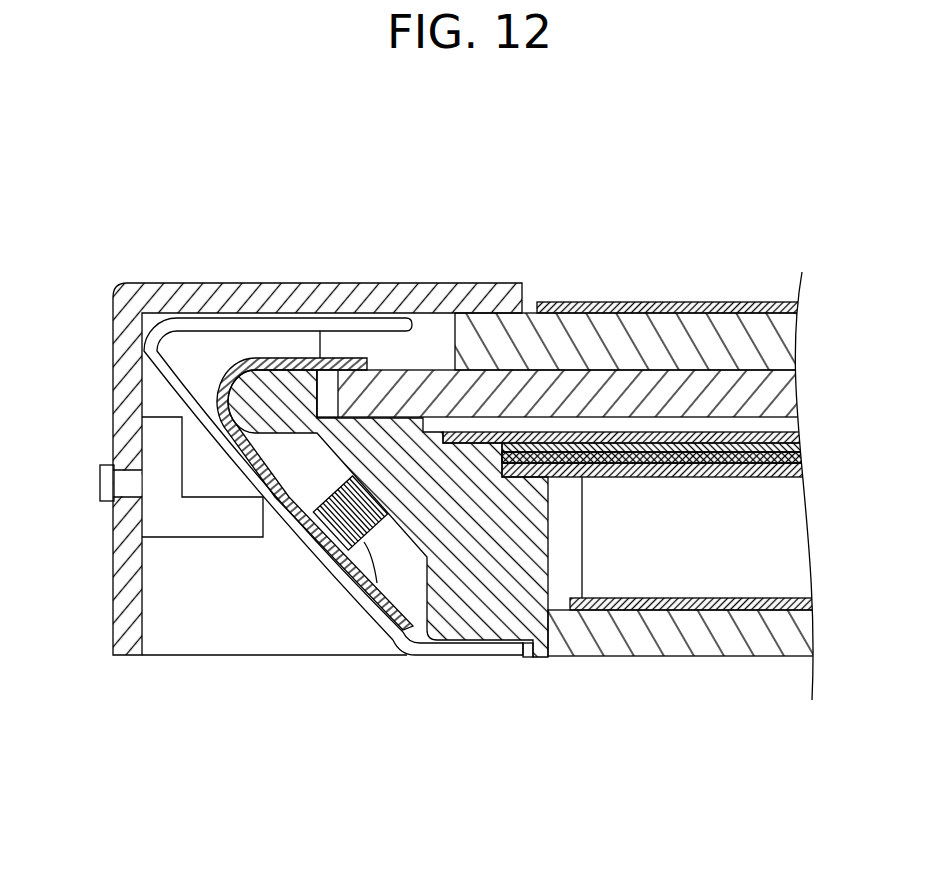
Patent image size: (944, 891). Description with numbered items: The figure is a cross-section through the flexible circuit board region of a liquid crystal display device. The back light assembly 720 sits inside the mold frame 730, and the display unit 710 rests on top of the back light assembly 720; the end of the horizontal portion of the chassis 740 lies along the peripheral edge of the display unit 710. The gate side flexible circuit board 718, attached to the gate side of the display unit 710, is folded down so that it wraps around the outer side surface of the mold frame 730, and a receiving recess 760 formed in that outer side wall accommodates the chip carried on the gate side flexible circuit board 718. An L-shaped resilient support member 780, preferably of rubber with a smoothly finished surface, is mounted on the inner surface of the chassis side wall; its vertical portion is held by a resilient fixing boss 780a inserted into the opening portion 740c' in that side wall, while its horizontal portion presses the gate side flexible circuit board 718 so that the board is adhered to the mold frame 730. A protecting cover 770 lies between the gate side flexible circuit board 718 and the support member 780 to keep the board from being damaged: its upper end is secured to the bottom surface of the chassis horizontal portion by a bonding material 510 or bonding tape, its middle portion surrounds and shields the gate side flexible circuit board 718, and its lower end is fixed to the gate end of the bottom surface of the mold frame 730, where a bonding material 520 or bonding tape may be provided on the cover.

The bonding material 510 is at (285, 312).
The bonding material 520 is at (475, 655).
The display unit 710 is at (625, 258).
The gate side flexible circuit board 718 is at (217, 387).
The back light assembly 720 is at (835, 425).
The mold frame 730 is at (690, 655).
The chassis 740 is at (452, 290).
The frame through-hole 740c' is at (80, 438).
The receiving recess 760 is at (400, 578).
The protecting cover 770 is at (527, 657).
The resilient support member 780 is at (207, 537).
The slider projection 780a is at (100, 483).